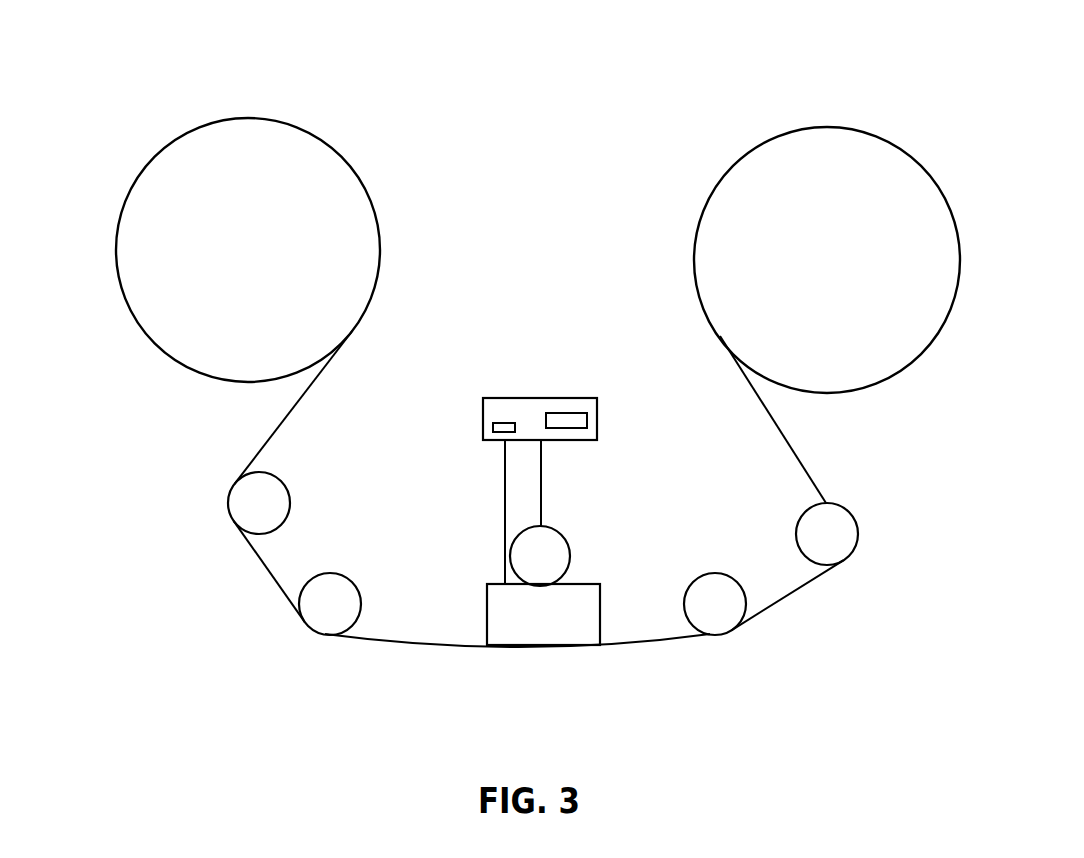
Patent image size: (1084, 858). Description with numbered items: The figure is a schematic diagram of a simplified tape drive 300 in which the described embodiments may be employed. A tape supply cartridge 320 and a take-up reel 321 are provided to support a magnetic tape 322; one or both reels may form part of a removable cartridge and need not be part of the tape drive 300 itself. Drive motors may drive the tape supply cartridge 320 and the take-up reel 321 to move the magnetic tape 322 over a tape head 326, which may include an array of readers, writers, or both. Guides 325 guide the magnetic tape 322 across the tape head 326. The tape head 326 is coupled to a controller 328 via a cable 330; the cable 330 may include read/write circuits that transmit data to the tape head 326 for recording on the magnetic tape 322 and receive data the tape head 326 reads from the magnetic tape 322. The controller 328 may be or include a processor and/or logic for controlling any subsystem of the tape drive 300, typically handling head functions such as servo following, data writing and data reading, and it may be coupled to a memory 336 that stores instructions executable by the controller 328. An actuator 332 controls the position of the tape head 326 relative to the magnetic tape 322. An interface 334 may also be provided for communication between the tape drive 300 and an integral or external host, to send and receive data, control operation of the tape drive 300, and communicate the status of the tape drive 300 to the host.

The tape drive 300 is at (186, 84).
The tape supply cartridge 320 is at (378, 223).
The take-up reel 321 is at (913, 363).
The magnetic tape 322 is at (412, 642).
The guides 325 is at (328, 573).
The tape head 326 is at (600, 613).
The controller 328 is at (538, 398).
The cable 330 is at (505, 553).
The actuator 332 is at (562, 535).
The interface 334 is at (577, 413).
The memory 336 is at (500, 423).